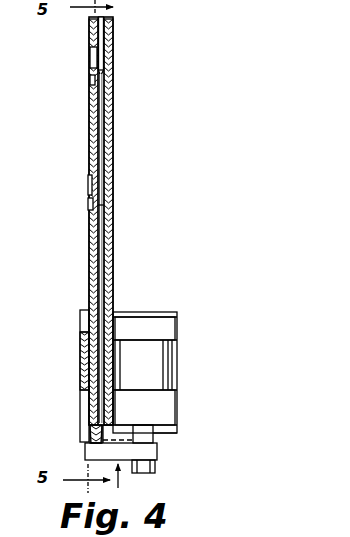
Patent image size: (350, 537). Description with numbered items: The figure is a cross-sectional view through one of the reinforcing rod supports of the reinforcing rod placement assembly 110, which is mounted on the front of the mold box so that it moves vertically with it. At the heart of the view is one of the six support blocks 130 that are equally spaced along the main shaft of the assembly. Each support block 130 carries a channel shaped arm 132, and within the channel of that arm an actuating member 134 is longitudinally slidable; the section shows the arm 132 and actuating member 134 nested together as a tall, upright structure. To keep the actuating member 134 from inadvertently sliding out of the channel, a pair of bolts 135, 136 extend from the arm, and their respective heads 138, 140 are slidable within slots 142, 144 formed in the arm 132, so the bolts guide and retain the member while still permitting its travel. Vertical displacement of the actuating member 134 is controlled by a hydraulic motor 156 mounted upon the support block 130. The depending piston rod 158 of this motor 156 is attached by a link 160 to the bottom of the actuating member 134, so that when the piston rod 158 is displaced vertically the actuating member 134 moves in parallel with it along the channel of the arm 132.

The reinforcing rod placement assembly 110 is at (148, 192).
The support block 130 is at (113, 142).
The channel shaped arm 132 is at (113, 239).
The actuating member 134 is at (113, 269).
The bolt 135 is at (101, 205).
The bolt 136 is at (103, 80).
The bolt head 138 is at (88, 205).
The bolt head 140 is at (94, 80).
The slot 142 is at (87, 185).
The slot 144 is at (92, 62).
The hydraulic motor 156 is at (150, 357).
The piston rod 158 is at (145, 433).
The link 160 is at (153, 453).